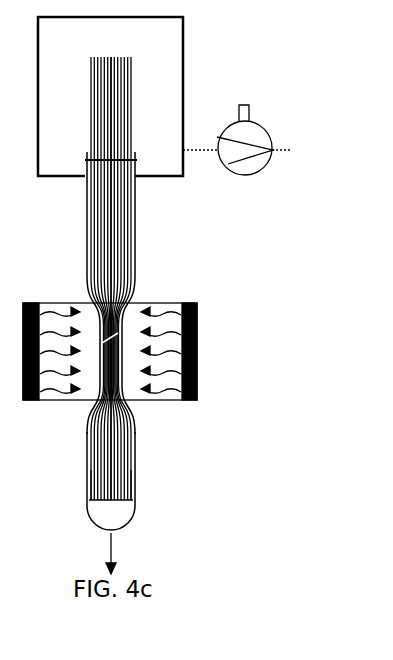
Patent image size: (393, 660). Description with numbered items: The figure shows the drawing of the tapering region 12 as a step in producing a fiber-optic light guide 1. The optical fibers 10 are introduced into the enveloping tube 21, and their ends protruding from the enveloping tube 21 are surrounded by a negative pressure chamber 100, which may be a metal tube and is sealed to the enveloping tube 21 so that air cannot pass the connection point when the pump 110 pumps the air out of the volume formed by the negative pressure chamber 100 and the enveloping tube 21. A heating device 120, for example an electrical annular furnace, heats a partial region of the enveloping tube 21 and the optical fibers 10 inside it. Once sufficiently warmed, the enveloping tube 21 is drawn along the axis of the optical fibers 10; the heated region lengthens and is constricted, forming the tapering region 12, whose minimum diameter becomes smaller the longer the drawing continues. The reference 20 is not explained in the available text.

The fiber-optic light guide 1 is at (137, 210).
The optical fibers 10 is at (123, 264).
The tapering region 12 is at (120, 370).
The drawn tube portion 20 is at (135, 443).
The enveloping tube 21 is at (133, 480).
The negative pressure chamber 100 is at (183, 165).
The pump 110 is at (262, 162).
The heating device 120 is at (197, 358).